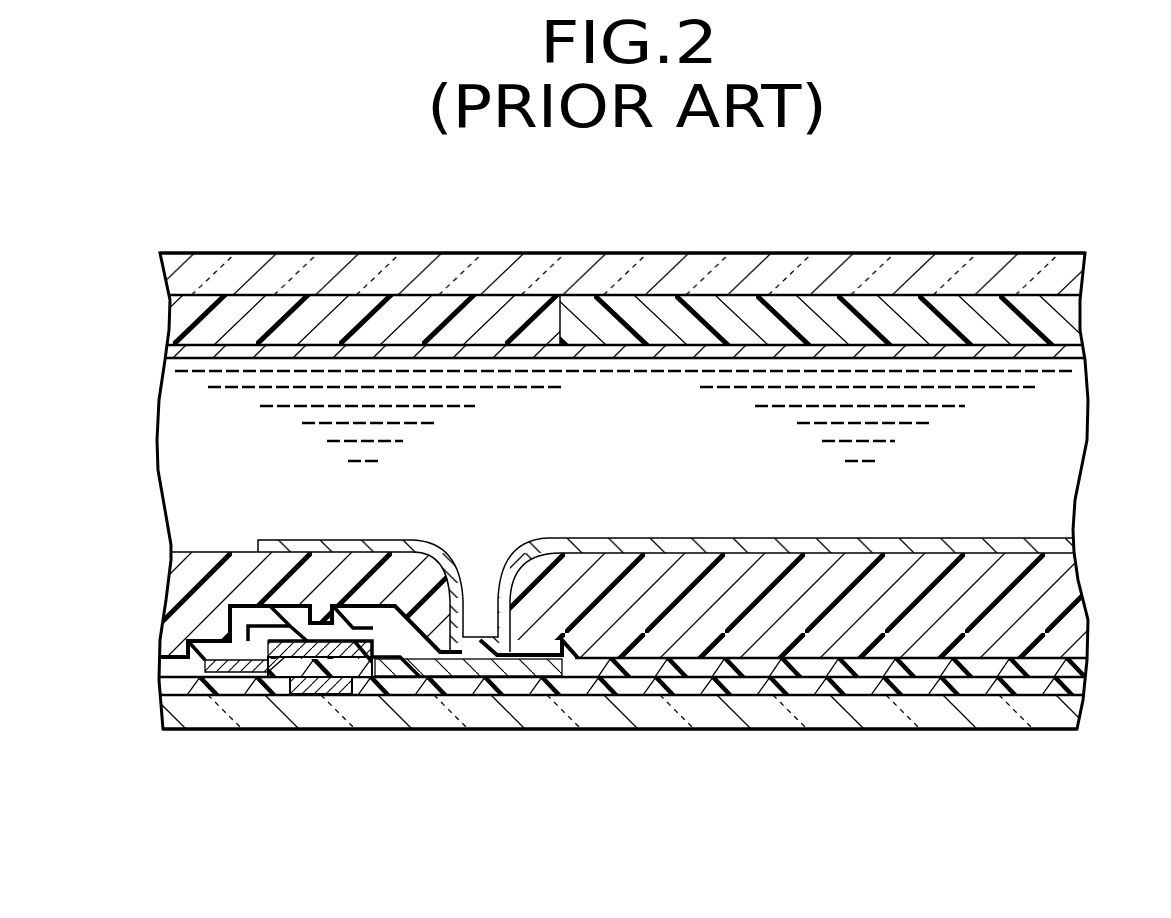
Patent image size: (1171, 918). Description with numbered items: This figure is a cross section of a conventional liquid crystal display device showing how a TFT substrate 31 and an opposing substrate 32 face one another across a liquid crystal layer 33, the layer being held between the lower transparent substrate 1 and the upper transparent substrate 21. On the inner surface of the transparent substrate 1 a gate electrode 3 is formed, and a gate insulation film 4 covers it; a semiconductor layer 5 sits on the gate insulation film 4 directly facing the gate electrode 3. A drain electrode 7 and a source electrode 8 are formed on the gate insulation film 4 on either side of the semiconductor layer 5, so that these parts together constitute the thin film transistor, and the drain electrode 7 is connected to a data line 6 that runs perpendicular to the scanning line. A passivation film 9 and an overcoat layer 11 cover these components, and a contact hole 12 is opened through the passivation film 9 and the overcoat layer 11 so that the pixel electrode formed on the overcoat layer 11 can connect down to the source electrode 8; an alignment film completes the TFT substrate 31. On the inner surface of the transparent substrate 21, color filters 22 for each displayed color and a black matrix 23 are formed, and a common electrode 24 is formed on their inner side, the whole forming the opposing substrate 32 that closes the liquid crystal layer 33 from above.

The transparent substrate 1 is at (818, 705).
The gate electrode 3 is at (316, 690).
The gate insulation film 4 is at (712, 685).
The semiconductor layer 5 is at (372, 690).
The data line 6 is at (215, 678).
The drain electrode 7 is at (270, 645).
The source electrode 8 is at (470, 655).
The passivation film 9 is at (930, 665).
The overcoat layer 11 is at (627, 630).
The contact hole 12 is at (522, 614).
The transparent substrate 21 is at (303, 283).
The color filters 22 is at (815, 325).
The black matrix 23 is at (440, 320).
The common electrode 24 is at (938, 355).
The TFT substrate 31 is at (1004, 740).
The opposing substrate 32 is at (1017, 226).
The liquid crystal layer 33 is at (675, 390).